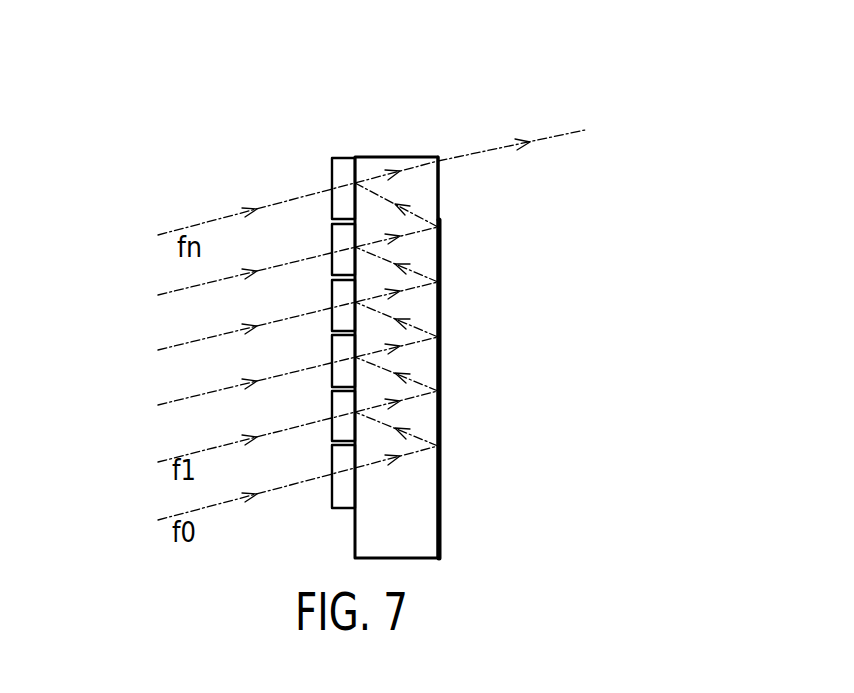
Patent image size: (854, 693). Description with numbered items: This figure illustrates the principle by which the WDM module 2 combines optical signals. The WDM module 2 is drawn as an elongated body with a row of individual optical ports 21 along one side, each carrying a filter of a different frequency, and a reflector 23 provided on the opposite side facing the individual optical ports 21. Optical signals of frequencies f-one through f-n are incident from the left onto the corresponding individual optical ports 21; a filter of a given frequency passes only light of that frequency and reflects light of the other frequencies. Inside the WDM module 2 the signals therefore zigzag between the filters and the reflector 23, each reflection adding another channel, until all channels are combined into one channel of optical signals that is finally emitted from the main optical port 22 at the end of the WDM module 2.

The WDM module 2 is at (393, 138).
The individual optical ports 21 is at (332, 208).
The main optical port 22 is at (438, 162).
The reflector 23 is at (442, 388).